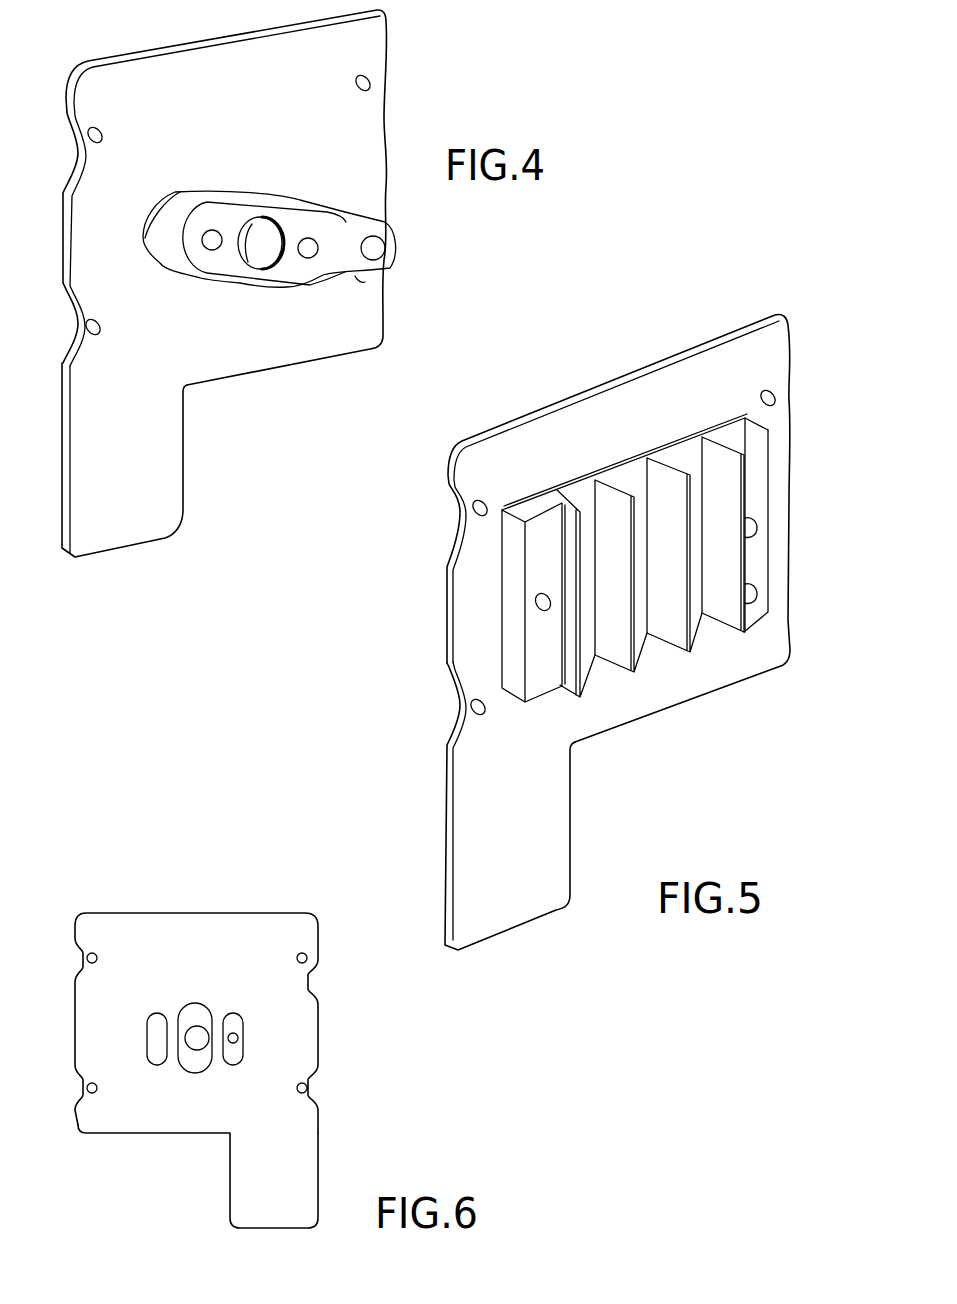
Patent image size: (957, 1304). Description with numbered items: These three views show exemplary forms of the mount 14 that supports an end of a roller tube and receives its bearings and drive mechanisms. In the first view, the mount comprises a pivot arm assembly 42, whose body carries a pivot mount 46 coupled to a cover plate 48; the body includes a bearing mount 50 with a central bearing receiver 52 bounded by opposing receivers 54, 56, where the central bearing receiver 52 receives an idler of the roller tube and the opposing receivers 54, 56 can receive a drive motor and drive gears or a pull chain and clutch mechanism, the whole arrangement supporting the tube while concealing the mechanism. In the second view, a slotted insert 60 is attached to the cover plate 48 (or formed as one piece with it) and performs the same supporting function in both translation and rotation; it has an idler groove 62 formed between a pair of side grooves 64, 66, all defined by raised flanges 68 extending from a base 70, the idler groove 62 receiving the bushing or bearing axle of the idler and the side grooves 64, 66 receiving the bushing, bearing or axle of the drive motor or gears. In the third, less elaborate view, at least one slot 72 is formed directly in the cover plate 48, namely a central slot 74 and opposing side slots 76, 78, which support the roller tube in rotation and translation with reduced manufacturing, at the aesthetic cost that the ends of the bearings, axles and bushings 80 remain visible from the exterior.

In FIG. 6, the first mount 14 is at (90, 912).
In FIG. 4, the pivot arm assembly 42 is at (173, 76).
In FIG. 4, the pivot mount 46 is at (384, 253).
In FIG. 4, the cover plate 48 is at (180, 457).
In FIG. 5, the cover plate 48 is at (567, 849).
In FIG. 6, the cover plate 48 is at (310, 1167).
In FIG. 4, the bearing mount 50 is at (292, 221).
In FIG. 4, the central bearing receiver 52 is at (258, 268).
In FIG. 4, the opposing receiver 54 is at (203, 240).
In FIG. 4, the opposing receiver 56 is at (317, 245).
In FIG. 5, the slotted insert 60 is at (512, 605).
In FIG. 5, the idler groove 62 is at (621, 537).
In FIG. 5, the side groove 64 is at (708, 632).
In FIG. 5, the side groove 66 is at (601, 677).
In FIG. 5, the raised flanges 68 is at (750, 472).
In FIG. 5, the base 70 is at (760, 545).
In FIG. 6, the slot 72 is at (231, 1056).
In FIG. 6, the central slot 74 is at (197, 1075).
In FIG. 6, the side slot 76 is at (153, 1068).
In FIG. 6, the side slot 78 is at (240, 1015).
In FIG. 6, the ends of the bearings, axles and bushings 80 is at (233, 1033).